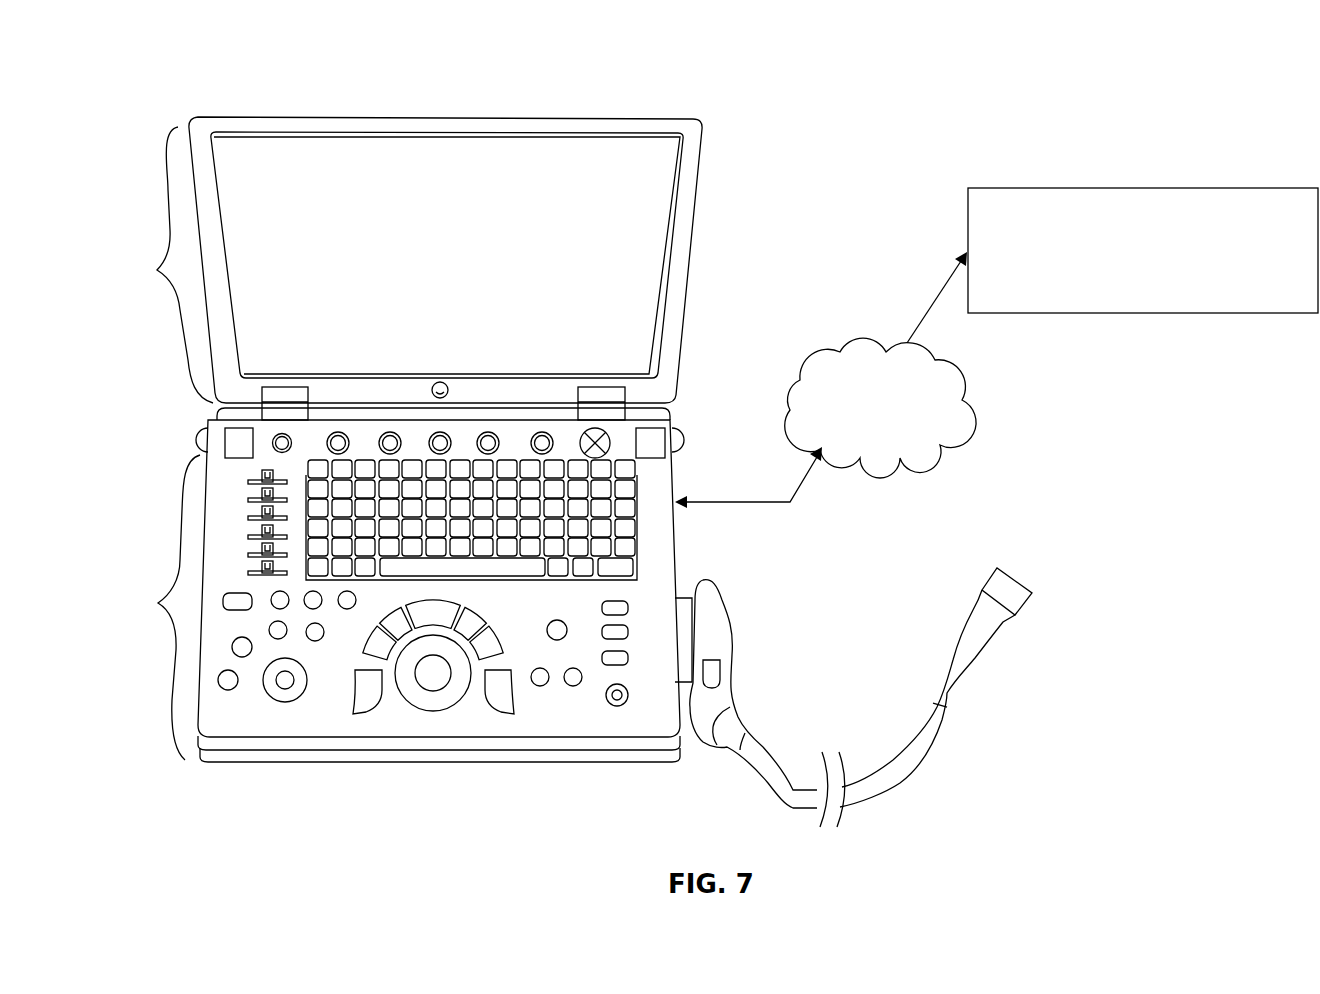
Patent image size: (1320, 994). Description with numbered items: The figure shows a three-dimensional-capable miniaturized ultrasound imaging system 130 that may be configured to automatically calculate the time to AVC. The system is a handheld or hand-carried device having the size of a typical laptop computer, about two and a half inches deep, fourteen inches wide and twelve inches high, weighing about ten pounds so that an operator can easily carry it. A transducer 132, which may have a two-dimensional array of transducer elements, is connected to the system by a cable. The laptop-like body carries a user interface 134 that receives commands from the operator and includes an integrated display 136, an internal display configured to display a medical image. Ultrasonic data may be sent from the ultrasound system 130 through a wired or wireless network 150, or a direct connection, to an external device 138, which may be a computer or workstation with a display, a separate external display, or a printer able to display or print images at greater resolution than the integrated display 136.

The miniaturized ultrasound imaging system 130 is at (172, 78).
The transducer 132 is at (856, 811).
The user interface 134 is at (158, 603).
The integrated display 136 is at (157, 270).
The external device 138 is at (1032, 187).
The network 150 is at (848, 343).